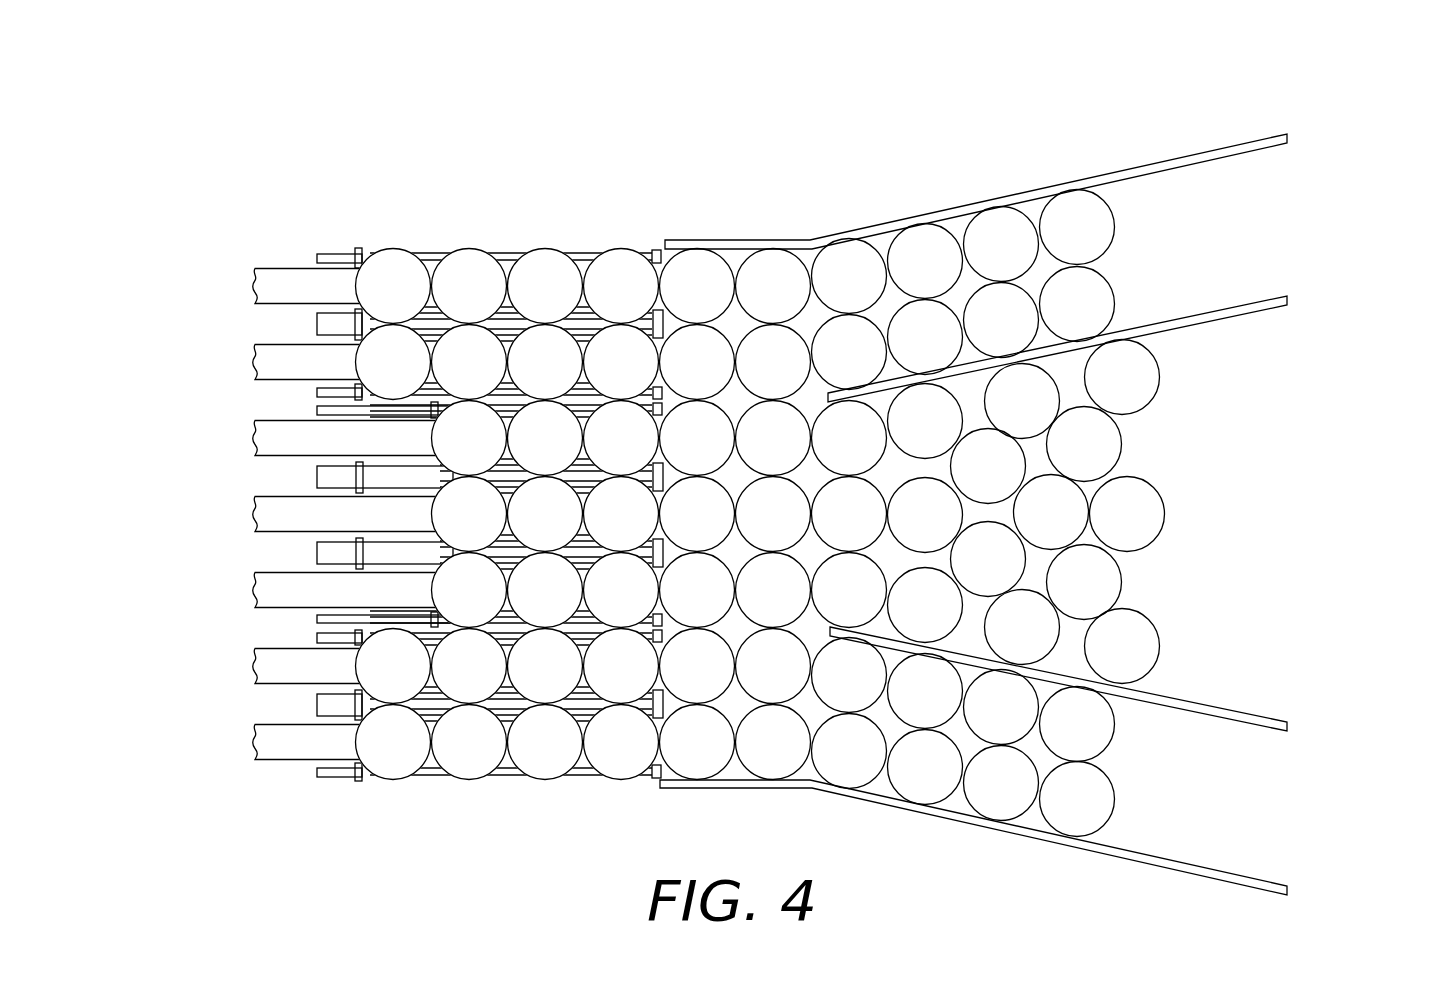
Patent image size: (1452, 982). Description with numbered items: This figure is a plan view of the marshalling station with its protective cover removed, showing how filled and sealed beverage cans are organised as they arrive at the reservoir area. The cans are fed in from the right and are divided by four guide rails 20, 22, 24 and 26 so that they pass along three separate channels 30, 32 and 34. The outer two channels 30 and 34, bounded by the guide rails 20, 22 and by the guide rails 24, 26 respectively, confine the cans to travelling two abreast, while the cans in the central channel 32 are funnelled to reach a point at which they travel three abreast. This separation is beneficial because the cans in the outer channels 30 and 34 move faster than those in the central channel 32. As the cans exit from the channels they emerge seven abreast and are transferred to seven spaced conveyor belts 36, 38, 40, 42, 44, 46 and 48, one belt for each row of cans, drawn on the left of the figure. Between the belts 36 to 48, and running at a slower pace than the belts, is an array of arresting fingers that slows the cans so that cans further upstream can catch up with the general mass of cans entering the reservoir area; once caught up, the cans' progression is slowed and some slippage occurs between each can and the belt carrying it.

The guide rail 20 is at (1193, 150).
The guide rail 22 is at (1202, 313).
The guide rail 24 is at (1225, 703).
The guide rail 26 is at (1200, 863).
The channel 30 is at (1303, 182).
The central channel 32 is at (1233, 478).
The channel 34 is at (1303, 780).
The conveyor belt 36 is at (260, 287).
The conveyor belt 38 is at (260, 363).
The conveyor belt 40 is at (260, 439).
The conveyor belt 42 is at (260, 515).
The conveyor belt 44 is at (260, 591).
The conveyor belt 46 is at (260, 667).
The conveyor belt 48 is at (260, 743).